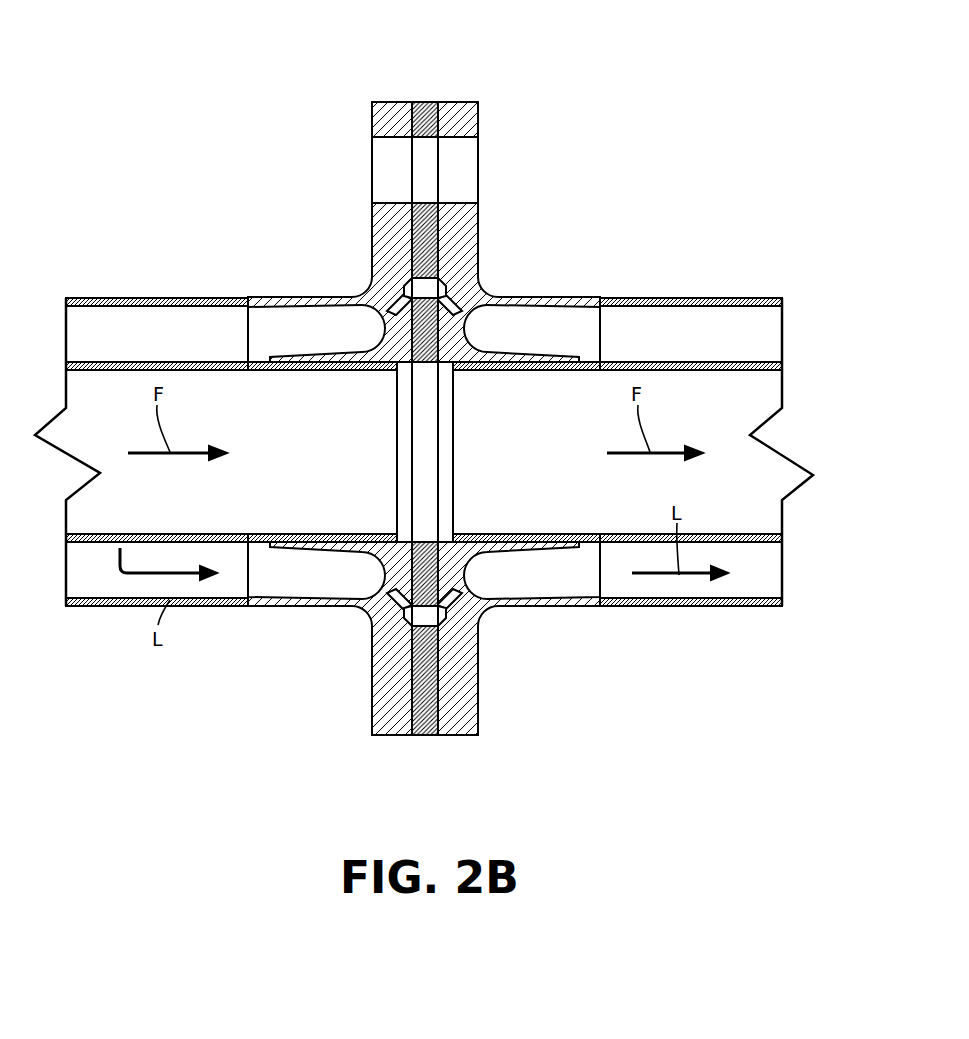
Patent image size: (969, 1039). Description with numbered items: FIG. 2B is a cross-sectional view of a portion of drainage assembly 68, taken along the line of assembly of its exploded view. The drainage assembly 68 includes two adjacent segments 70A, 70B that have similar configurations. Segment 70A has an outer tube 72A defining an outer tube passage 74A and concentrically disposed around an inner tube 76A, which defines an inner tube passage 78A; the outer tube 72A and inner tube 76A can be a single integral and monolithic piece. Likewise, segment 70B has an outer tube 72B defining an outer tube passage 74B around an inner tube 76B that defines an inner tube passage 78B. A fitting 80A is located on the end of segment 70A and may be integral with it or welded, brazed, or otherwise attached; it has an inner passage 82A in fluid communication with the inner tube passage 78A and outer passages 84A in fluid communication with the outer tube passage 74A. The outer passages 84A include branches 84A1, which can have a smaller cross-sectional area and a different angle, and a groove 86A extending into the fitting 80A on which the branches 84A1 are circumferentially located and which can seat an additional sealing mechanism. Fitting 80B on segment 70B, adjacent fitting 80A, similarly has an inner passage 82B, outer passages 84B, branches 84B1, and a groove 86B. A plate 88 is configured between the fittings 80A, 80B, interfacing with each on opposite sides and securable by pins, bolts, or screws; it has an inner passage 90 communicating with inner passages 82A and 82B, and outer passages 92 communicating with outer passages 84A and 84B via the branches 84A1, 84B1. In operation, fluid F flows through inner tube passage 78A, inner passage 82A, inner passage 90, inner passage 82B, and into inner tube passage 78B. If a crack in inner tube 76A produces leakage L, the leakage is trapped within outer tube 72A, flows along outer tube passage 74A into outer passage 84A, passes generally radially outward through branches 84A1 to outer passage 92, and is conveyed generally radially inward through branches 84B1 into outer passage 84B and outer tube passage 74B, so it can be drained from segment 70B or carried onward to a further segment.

The drainage assembly 68 is at (55, 184).
The segment 70A is at (176, 247).
The segment 70B is at (667, 242).
The outer tube 72A is at (236, 606).
The outer tube 72B is at (713, 606).
The outer tube passage 74A is at (194, 596).
The outer tube passage 74B is at (647, 597).
The inner tube 76A is at (78, 552).
The inner tube 76B is at (766, 552).
The inner tube passage 78A is at (97, 534).
The inner tube passage 78B is at (746, 535).
The fitting 80A is at (372, 252).
The fitting 80B is at (478, 250).
The inner passage 82A is at (395, 412).
The inner passage 82B is at (455, 412).
The outer passages 84A is at (320, 591).
The outer passages 84B is at (507, 596).
The branches 84A1 is at (375, 680).
The branches 84B1 is at (477, 677).
The groove 86A is at (407, 640).
The groove 86B is at (443, 640).
The plate 88 is at (424, 118).
The inner passage 90 is at (440, 468).
The outer passages 92 is at (423, 635).